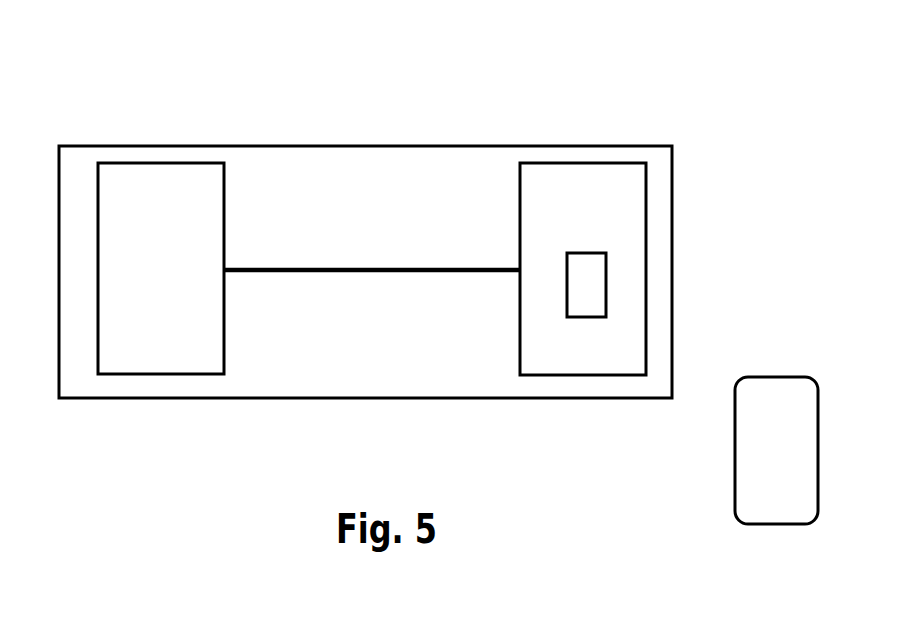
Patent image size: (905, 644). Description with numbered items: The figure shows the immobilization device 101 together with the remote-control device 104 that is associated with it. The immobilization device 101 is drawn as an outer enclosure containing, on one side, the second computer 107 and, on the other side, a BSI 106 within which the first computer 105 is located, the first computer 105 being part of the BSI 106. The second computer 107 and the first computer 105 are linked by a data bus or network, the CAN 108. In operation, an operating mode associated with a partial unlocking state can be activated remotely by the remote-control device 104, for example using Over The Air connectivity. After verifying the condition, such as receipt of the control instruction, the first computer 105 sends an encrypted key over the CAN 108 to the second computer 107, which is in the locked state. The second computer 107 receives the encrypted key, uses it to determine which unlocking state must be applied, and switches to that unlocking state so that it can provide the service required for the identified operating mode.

The immobilization device 101 is at (591, 130).
The remote-control device 104 is at (736, 473).
The first computer 105 is at (597, 278).
The BSI 106 is at (647, 205).
The second computer 107 is at (144, 167).
The CAN 108 is at (350, 268).